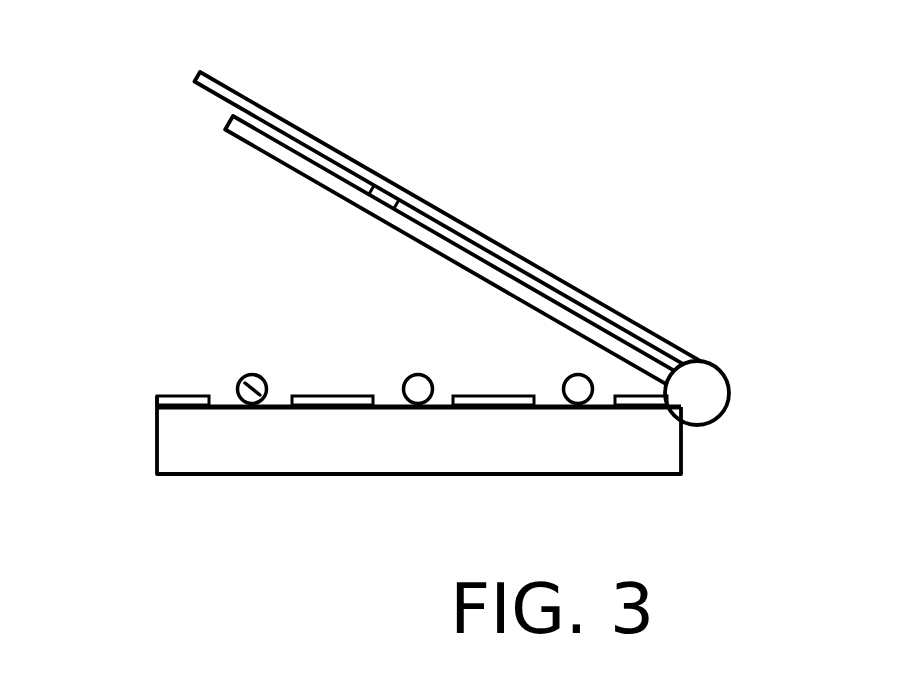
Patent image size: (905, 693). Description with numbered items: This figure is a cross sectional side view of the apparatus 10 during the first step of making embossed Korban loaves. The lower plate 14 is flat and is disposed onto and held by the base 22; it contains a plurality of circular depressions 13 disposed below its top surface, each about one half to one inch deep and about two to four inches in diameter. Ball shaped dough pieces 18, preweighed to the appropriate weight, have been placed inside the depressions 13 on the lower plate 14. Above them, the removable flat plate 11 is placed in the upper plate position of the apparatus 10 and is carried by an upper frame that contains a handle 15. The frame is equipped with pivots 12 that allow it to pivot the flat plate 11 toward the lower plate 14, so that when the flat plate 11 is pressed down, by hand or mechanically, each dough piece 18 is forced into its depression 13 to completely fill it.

The apparatus 10 is at (121, 233).
The flat plate 11 is at (430, 243).
The pivots 12 is at (690, 383).
The depressions 13 is at (229, 402).
The lower plate 14 is at (342, 397).
The handle 15 is at (372, 167).
The ball shaped dough pieces 18 is at (268, 408).
The base 22 is at (203, 459).